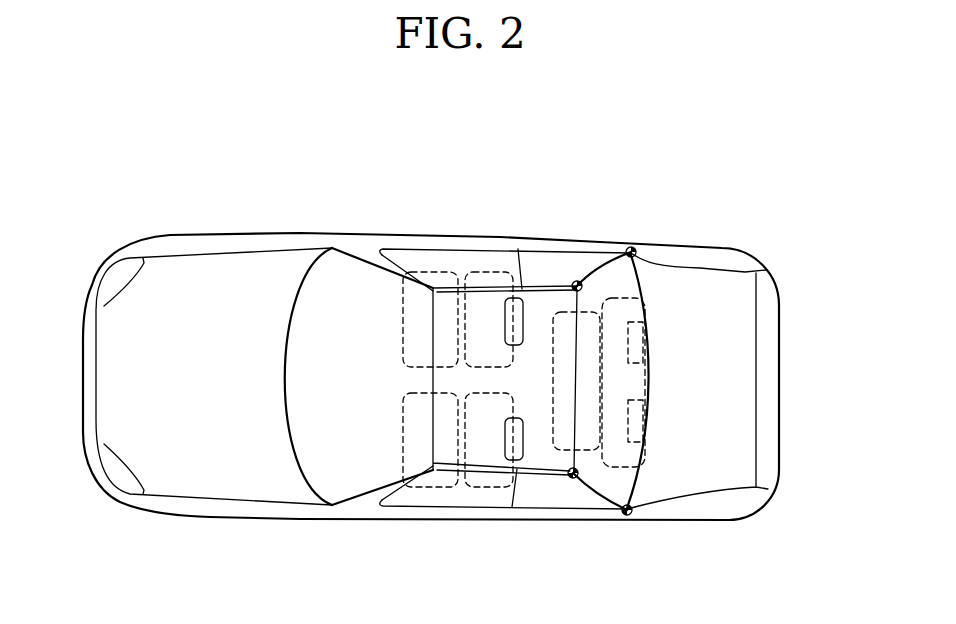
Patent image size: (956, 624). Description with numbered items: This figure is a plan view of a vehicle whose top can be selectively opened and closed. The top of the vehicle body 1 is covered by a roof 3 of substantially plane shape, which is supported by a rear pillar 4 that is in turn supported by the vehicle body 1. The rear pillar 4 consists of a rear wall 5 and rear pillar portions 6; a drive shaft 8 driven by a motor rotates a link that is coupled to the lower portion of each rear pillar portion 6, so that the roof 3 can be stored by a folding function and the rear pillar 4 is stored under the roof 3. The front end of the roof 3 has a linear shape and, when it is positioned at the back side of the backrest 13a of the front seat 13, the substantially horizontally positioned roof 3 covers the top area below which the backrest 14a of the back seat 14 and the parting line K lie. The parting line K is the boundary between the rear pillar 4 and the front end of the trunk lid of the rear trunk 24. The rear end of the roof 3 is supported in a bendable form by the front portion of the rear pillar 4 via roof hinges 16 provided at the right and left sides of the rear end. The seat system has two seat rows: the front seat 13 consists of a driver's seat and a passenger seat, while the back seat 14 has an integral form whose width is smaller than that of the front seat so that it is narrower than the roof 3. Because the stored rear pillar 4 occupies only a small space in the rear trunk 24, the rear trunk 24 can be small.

The vehicle body 1 is at (223, 217).
The roof 3 is at (537, 303).
The rear pillar 4 is at (640, 299).
The rear wall 5 is at (648, 366).
The rear pillar portions 6 is at (634, 248).
The drive shaft 8 is at (658, 252).
The front seat 13 is at (403, 328).
The backrest of front seat 13a is at (497, 272).
The back seat 14 is at (593, 308).
The backrest of back seat 14a is at (628, 382).
The roof hinges 16 is at (578, 281).
The rear trunk 24 is at (737, 384).
The parting line K is at (648, 340).